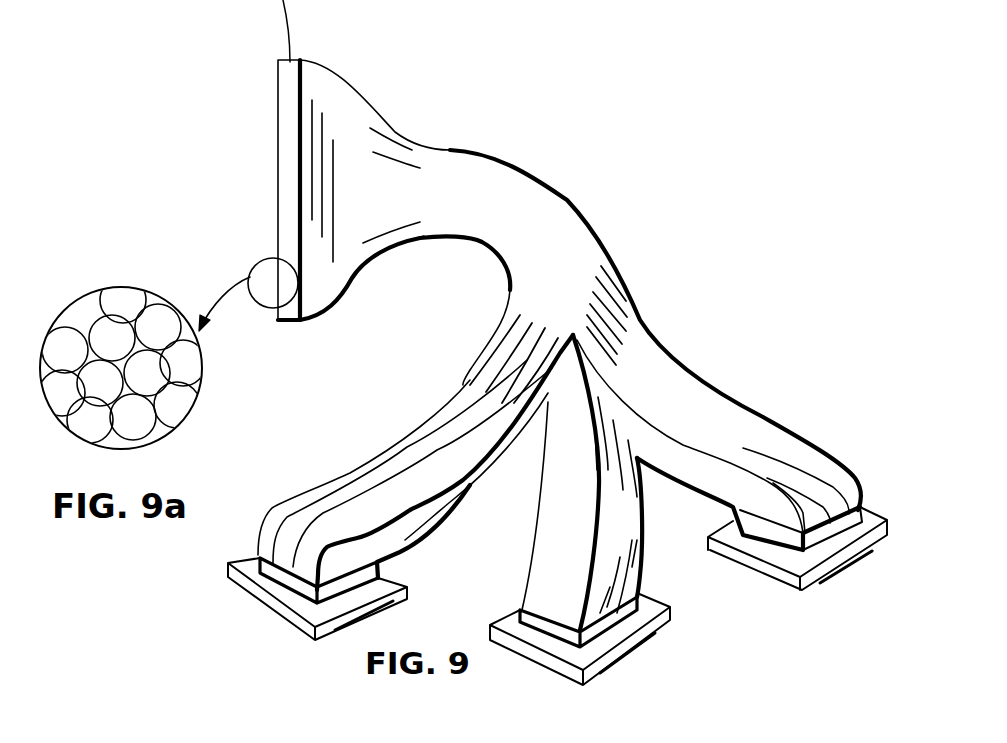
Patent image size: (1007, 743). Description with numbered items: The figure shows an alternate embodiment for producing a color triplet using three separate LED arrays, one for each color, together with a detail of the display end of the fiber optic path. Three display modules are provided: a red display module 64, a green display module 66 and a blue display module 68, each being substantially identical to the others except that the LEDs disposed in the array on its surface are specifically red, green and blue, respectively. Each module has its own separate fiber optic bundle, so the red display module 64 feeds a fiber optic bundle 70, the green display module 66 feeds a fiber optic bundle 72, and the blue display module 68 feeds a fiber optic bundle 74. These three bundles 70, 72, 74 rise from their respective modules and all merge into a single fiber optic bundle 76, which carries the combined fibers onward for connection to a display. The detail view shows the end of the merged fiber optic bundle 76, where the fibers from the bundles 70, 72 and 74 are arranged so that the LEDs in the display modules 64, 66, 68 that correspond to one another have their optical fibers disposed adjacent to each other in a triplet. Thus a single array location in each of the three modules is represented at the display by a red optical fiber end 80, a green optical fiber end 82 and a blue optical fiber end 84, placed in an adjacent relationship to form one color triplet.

In FIG. 9, the red display module 64 is at (273, 607).
In FIG. 9, the green display module 66 is at (613, 652).
In FIG. 9, the blue display module 68 is at (847, 553).
In FIG. 9, the fiber optic bundle 70 is at (443, 432).
In FIG. 9, the fiber optic bundle 72 is at (619, 527).
In FIG. 9, the fiber optic bundle 74 is at (683, 405).
In FIG. 9, the single fiber optic bundle 76 is at (557, 218).
In FIG. 9A, the red optical fiber end 80 is at (93, 325).
In FIG. 9A, the green optical fiber end 82 is at (157, 363).
In FIG. 9A, the blue optical fiber end 84 is at (108, 392).